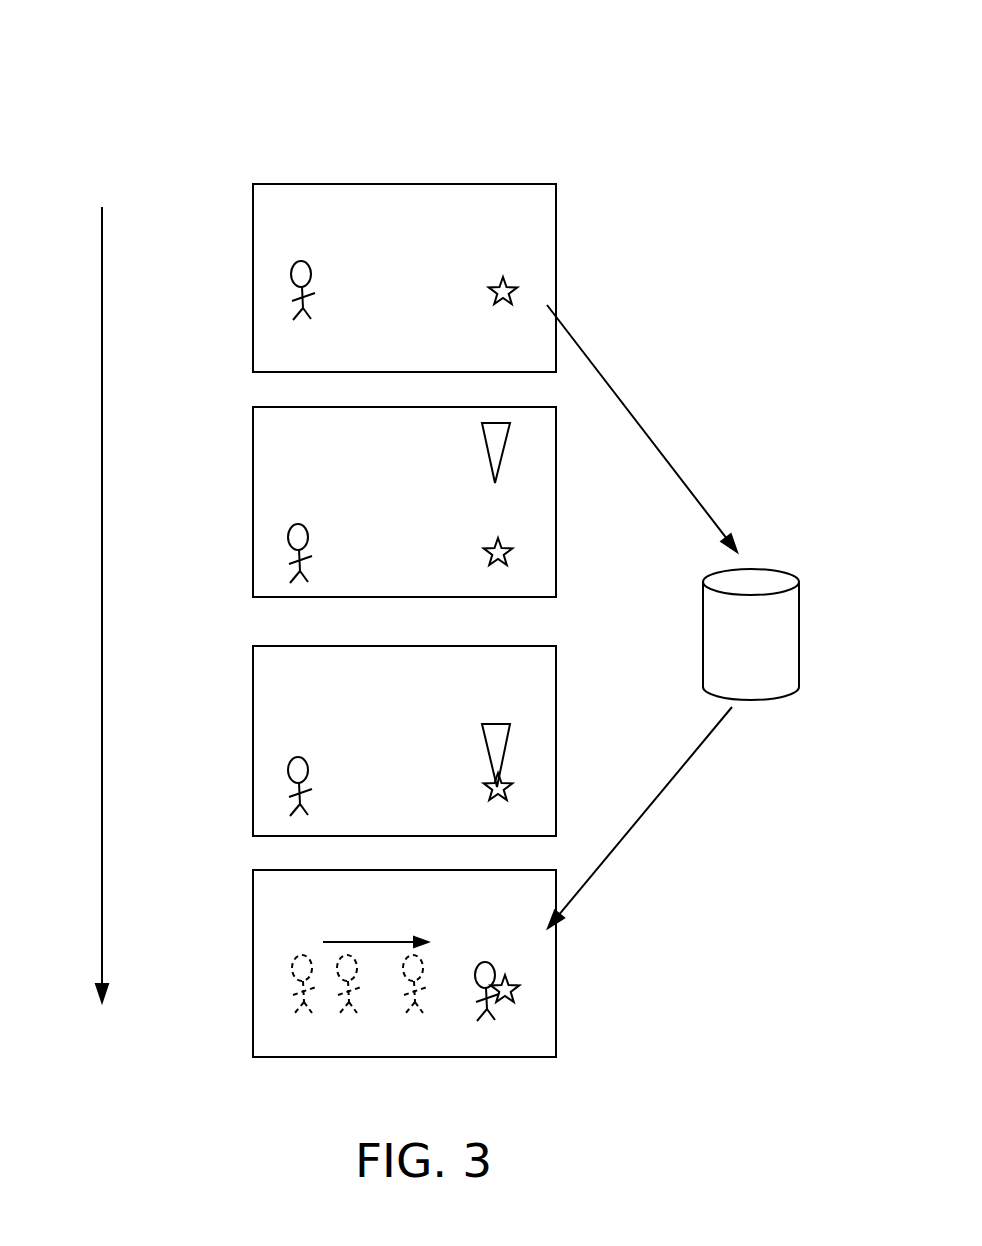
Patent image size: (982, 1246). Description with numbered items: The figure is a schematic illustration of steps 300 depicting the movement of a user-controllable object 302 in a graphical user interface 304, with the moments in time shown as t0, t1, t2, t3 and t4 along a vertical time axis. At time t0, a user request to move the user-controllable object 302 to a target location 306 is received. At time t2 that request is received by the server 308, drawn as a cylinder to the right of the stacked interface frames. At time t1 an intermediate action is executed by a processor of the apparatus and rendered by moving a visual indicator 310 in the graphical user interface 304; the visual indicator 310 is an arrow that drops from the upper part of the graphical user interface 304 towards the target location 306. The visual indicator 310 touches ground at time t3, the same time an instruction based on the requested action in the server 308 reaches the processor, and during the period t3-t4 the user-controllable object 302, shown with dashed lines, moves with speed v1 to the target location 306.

The steps 300 is at (738, 56).
The user-controllable object 302 is at (227, 249).
The graphical user interface 304 is at (399, 238).
The target location 306 is at (561, 253).
The server 308 is at (778, 654).
The visual indicator 310 is at (550, 481).